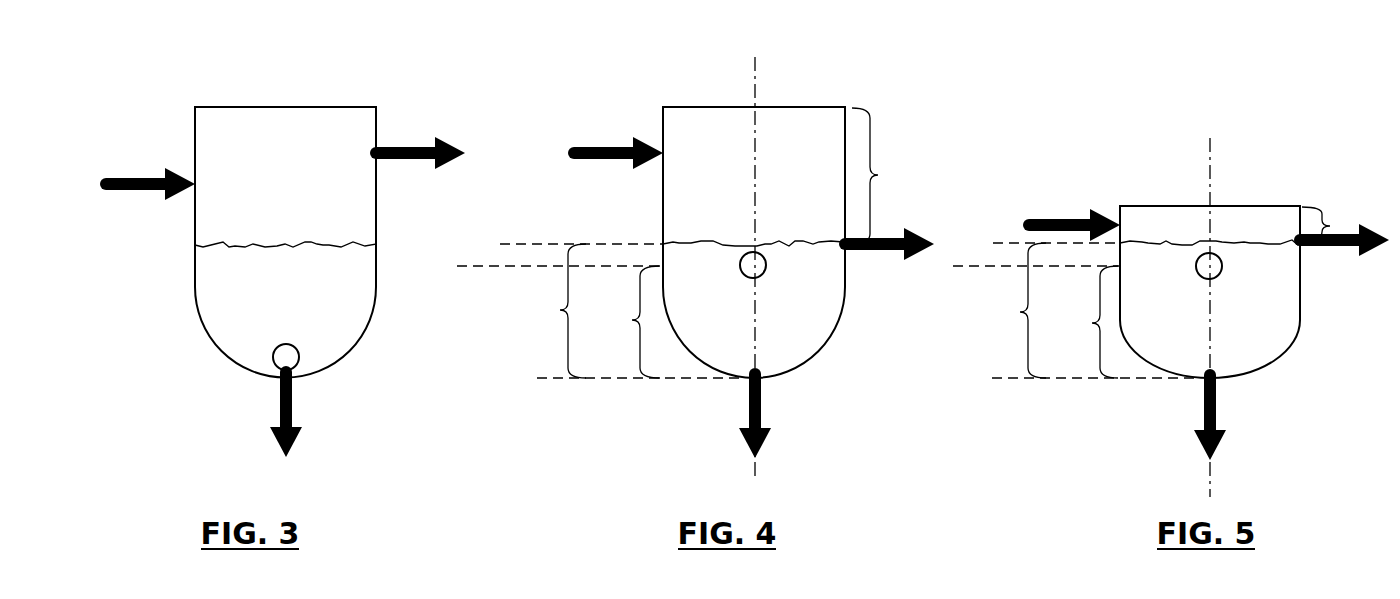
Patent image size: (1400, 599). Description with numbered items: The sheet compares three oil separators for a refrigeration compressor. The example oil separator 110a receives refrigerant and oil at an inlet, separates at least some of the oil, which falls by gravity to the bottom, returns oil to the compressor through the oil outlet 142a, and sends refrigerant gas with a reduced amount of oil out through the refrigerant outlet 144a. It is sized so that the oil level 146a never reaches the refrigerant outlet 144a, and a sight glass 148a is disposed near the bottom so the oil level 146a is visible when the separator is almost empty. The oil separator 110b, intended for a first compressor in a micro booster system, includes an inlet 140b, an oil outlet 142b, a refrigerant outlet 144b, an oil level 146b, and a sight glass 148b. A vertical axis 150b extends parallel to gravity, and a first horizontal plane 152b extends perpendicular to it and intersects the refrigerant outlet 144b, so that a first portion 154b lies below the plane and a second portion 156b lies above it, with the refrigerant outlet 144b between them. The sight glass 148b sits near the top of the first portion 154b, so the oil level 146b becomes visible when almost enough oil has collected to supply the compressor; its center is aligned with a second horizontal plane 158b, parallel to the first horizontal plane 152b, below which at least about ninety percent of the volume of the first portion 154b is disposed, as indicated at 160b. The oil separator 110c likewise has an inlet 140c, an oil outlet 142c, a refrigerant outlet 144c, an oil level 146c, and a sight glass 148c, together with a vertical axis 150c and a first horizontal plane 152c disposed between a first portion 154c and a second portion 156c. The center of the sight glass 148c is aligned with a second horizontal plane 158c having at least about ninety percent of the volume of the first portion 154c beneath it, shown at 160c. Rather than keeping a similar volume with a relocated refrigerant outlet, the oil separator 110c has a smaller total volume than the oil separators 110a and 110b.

In FIG. 3, the oil separator 110a is at (183, 42).
In FIG. 4, the oil separator 110b is at (654, 60).
In FIG. 5, the oil separator 110c is at (1111, 135).
In FIG. 4, the inlet 140b is at (597, 146).
In FIG. 5, the inlet 140c is at (1085, 217).
In FIG. 3, the oil outlet 142a is at (293, 407).
In FIG. 4, the oil outlet 142b is at (762, 418).
In FIG. 5, the oil outlet 142c is at (1218, 418).
In FIG. 3, the refrigerant outlet 144a is at (413, 142).
In FIG. 4, the refrigerant outlet 144b is at (846, 250).
In FIG. 5, the refrigerant outlet 144c is at (1317, 248).
In FIG. 3, the oil level 146a is at (122, 176).
In FIG. 4, the oil level 146b is at (745, 243).
In FIG. 5, the oil level 146c is at (1200, 243).
In FIG. 3, the sight glass 148a is at (273, 358).
In FIG. 4, the sight glass 148b is at (760, 277).
In FIG. 5, the sight glass 148c is at (1217, 278).
In FIG. 4, the vertical axis 150b is at (771, 75).
In FIG. 5, the vertical axis 150c is at (1226, 175).
In FIG. 4, the first horizontal plane 152b is at (560, 244).
In FIG. 5, the first horizontal plane 152c is at (1020, 240).
In FIG. 4, the first portion 154b is at (624, 311).
In FIG. 5, the first portion 154c is at (1082, 310).
In FIG. 4, the second portion 156b is at (891, 176).
In FIG. 5, the second portion 156c is at (1341, 223).
In FIG. 4, the second horizontal plane 158b is at (488, 266).
In FIG. 5, the second horizontal plane 158c is at (965, 268).
In FIG. 4, the volume below second horizontal plane 160b is at (619, 322).
In FIG. 5, the volume below second horizontal plane 160c is at (1079, 322).